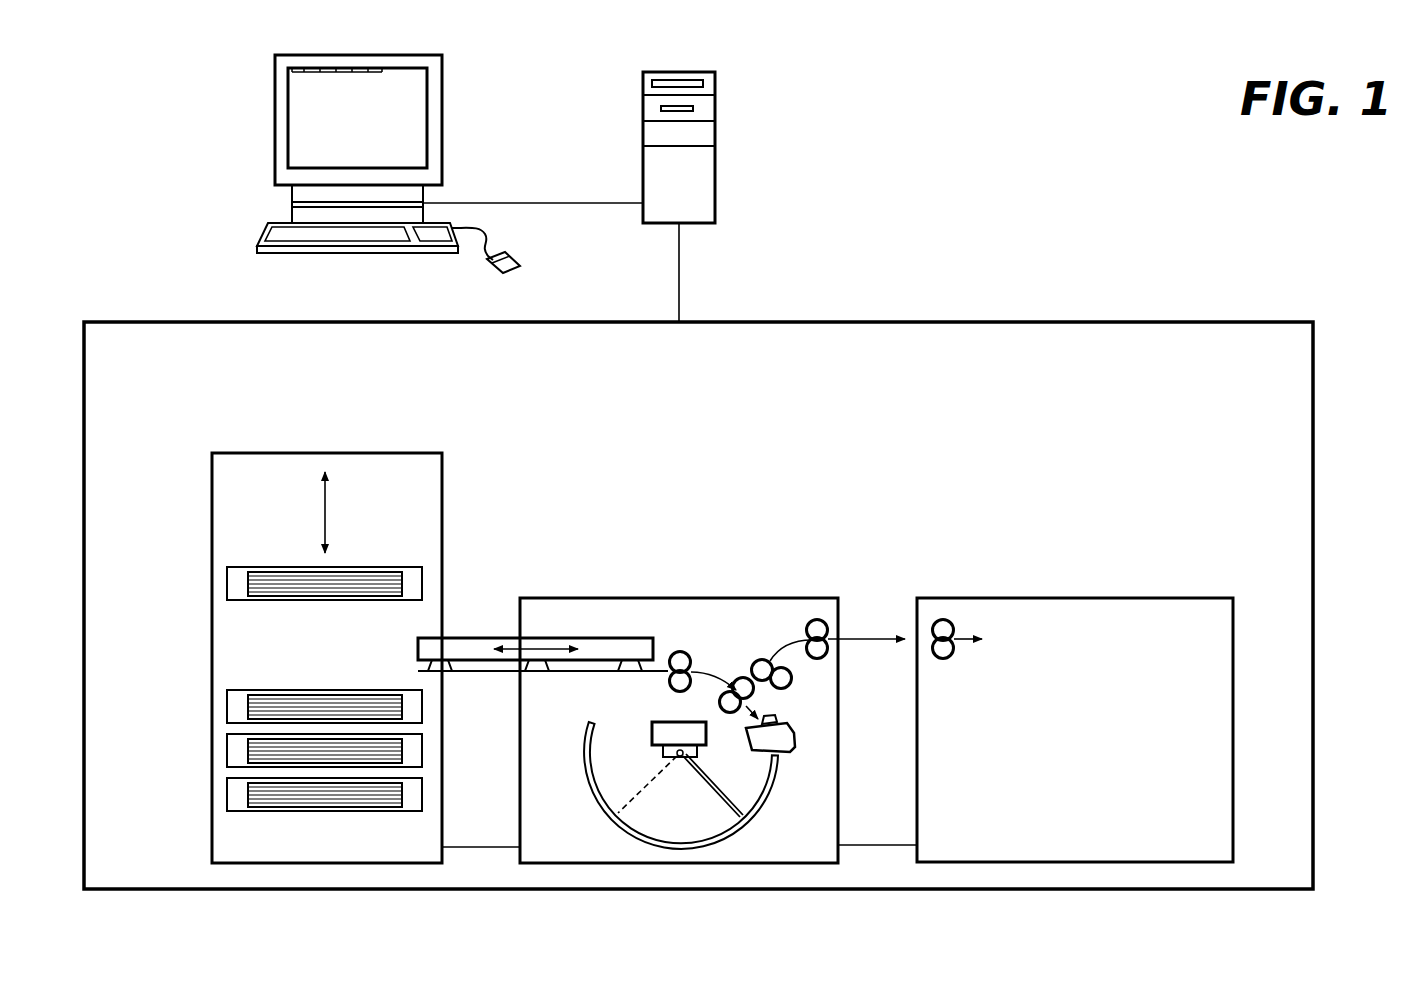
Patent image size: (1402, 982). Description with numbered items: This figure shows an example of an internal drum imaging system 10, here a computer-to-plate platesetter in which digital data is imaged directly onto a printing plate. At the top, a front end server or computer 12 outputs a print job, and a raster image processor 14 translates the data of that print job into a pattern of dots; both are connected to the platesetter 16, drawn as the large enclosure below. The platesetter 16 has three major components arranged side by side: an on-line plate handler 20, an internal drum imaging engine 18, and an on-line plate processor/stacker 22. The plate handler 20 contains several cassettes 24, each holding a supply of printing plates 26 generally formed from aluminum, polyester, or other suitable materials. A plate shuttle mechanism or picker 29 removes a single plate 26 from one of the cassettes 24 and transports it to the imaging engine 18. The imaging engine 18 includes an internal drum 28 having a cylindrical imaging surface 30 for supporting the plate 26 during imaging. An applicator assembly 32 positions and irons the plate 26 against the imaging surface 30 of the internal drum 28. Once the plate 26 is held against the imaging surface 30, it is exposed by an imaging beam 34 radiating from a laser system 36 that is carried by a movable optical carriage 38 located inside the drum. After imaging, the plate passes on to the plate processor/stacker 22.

The internal drum imaging system 10 is at (1078, 178).
The front end server or computer 12 is at (325, 194).
The raster image processor (RIP) 14 is at (715, 108).
The platesetter 16 is at (848, 320).
The internal drum imaging engine 18 is at (808, 600).
The on-line plate handler 20 is at (422, 481).
The on-line plate processor/stacker 22 is at (1174, 606).
The cassette 24 is at (410, 584).
The printing plates 26 is at (372, 580).
The internal drum 28 is at (587, 787).
The plate shuttle mechanism or picker 29 is at (578, 635).
The cylindrical imaging surface 30 is at (662, 840).
The applicator assembly 32 is at (783, 750).
The imaging beam 34 is at (717, 792).
The laser system 36 is at (663, 752).
The movable optical carriage 38 is at (665, 725).